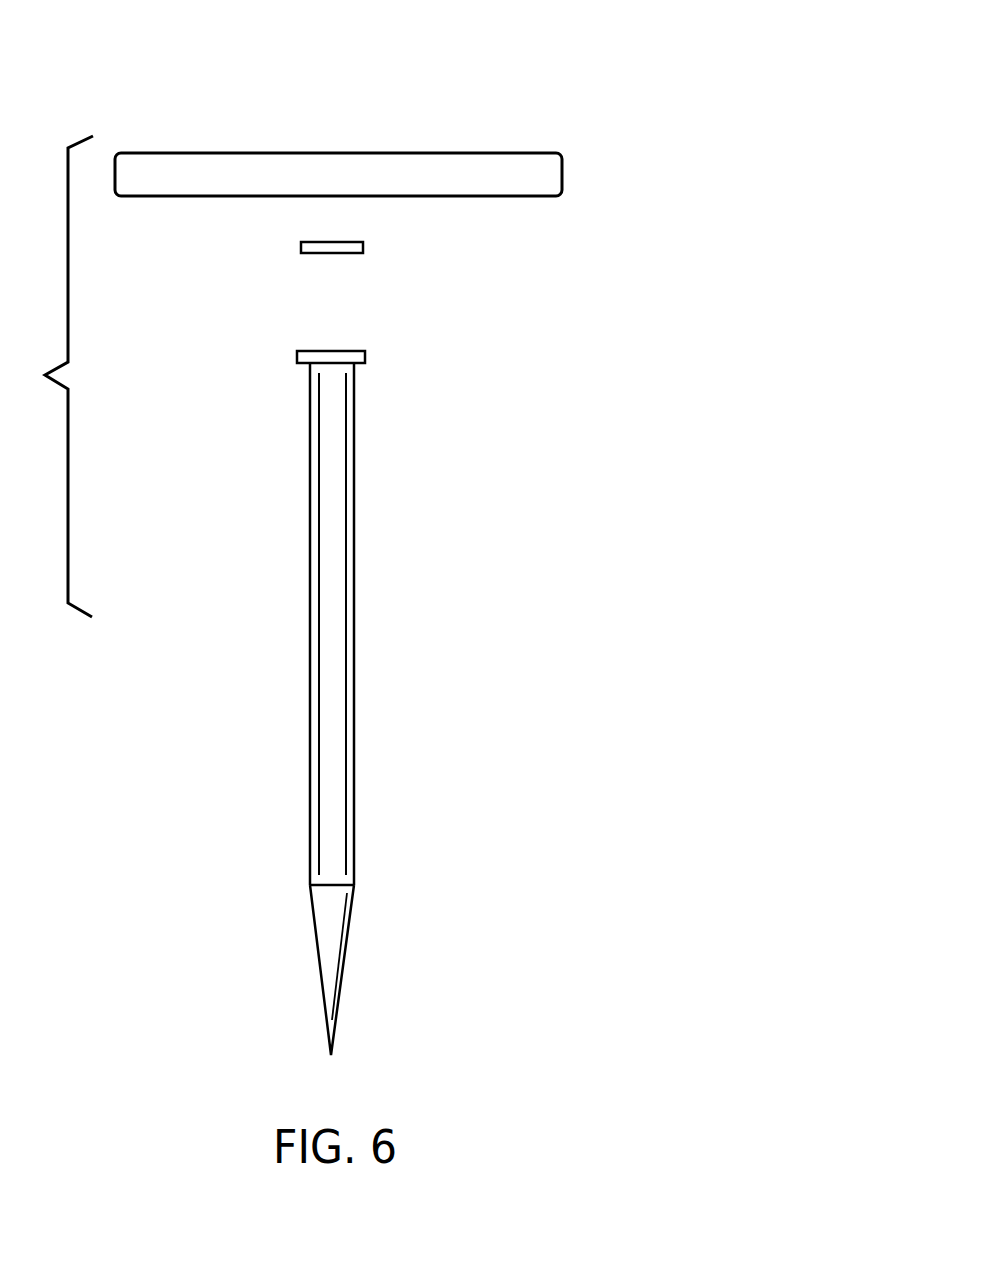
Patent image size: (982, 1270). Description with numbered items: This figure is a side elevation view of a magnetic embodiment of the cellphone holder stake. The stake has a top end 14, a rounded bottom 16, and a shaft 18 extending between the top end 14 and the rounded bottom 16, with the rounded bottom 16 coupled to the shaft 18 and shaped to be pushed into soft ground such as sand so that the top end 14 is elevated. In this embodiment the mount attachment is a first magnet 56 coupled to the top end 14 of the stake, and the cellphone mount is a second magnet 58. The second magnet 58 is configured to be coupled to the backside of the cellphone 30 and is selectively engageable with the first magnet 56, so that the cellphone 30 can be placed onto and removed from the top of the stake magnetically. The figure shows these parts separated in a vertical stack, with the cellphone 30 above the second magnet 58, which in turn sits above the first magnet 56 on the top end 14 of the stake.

The cellphone 30 is at (563, 176).
The second magnet 58 is at (363, 245).
The first magnet 56 is at (358, 357).
The top end 14 is at (348, 367).
The shaft 18 is at (345, 683).
The rounded bottom 16 is at (333, 950).